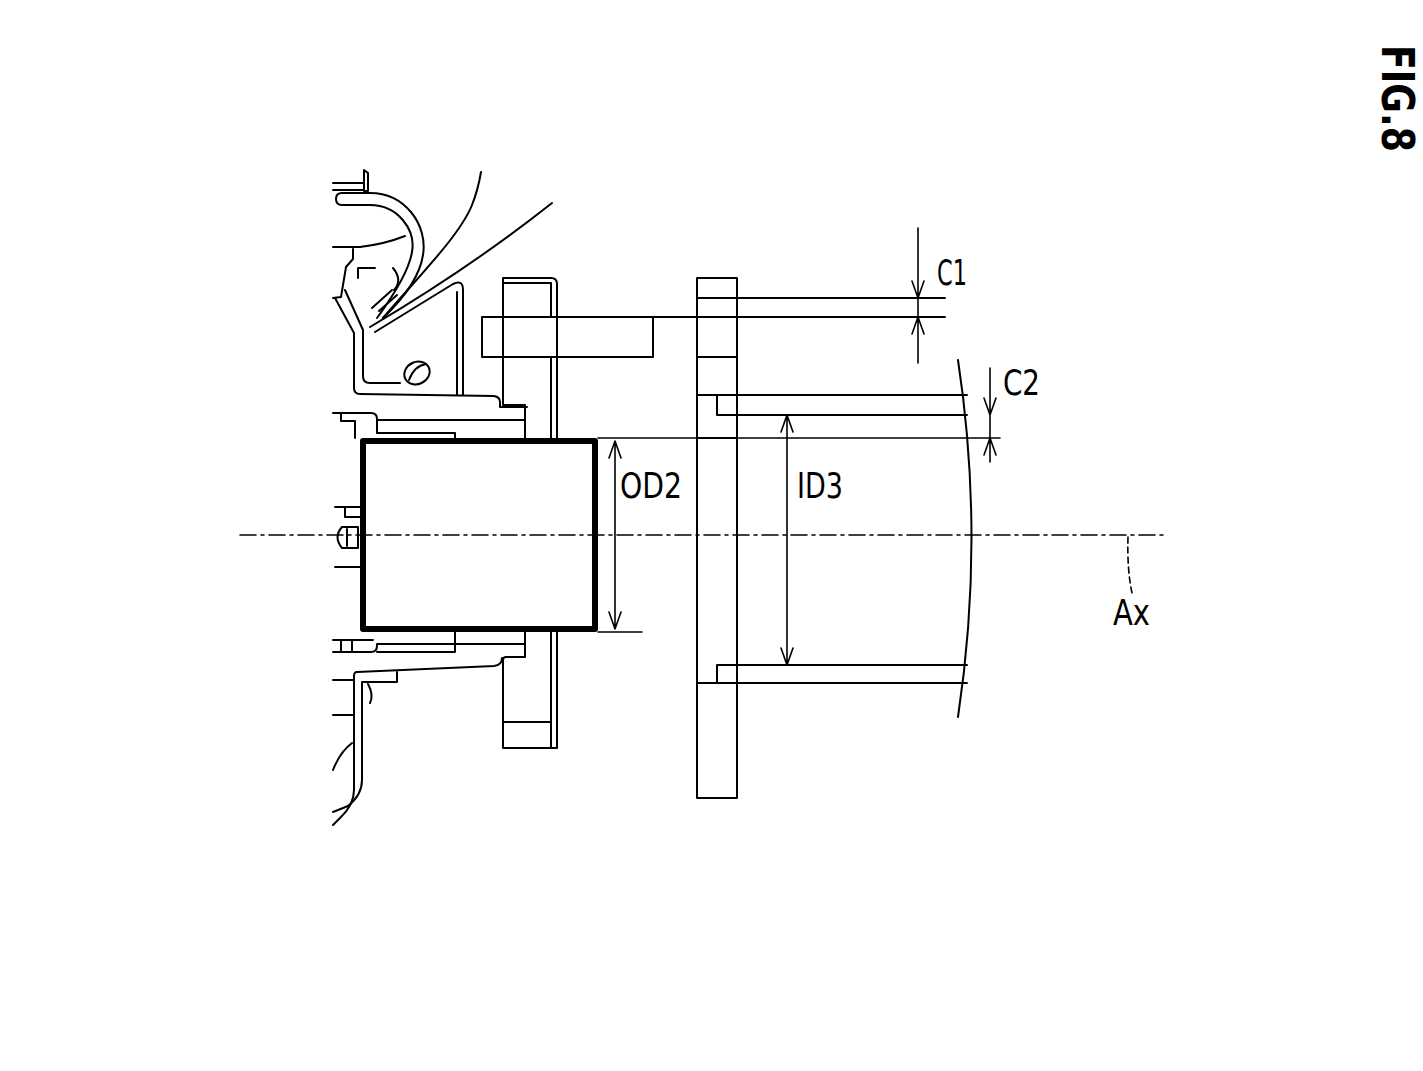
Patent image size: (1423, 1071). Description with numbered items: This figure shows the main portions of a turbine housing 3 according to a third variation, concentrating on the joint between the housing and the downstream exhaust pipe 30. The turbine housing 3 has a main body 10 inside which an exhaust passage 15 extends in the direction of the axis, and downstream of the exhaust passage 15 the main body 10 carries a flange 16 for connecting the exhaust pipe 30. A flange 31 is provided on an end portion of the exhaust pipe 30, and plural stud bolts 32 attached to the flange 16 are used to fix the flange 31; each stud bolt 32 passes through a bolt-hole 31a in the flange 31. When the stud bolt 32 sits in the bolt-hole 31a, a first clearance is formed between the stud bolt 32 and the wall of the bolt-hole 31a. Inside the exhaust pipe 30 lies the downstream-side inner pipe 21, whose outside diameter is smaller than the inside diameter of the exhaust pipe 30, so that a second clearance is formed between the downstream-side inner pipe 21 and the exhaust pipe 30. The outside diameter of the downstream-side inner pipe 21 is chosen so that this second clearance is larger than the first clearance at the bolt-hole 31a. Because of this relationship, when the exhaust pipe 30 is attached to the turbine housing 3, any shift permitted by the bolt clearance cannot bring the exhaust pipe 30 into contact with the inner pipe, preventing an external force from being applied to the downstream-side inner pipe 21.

The turbine housing 3 is at (525, 171).
The exhaust passage 15 is at (404, 483).
The downstream-side inner pipe 21 is at (432, 615).
The main body 10 is at (461, 662).
The flange 16 is at (530, 738).
The stud bolt 32 is at (602, 332).
The flange 31 is at (715, 800).
The bolt-hole 31a is at (717, 350).
The exhaust pipe 30 is at (845, 677).